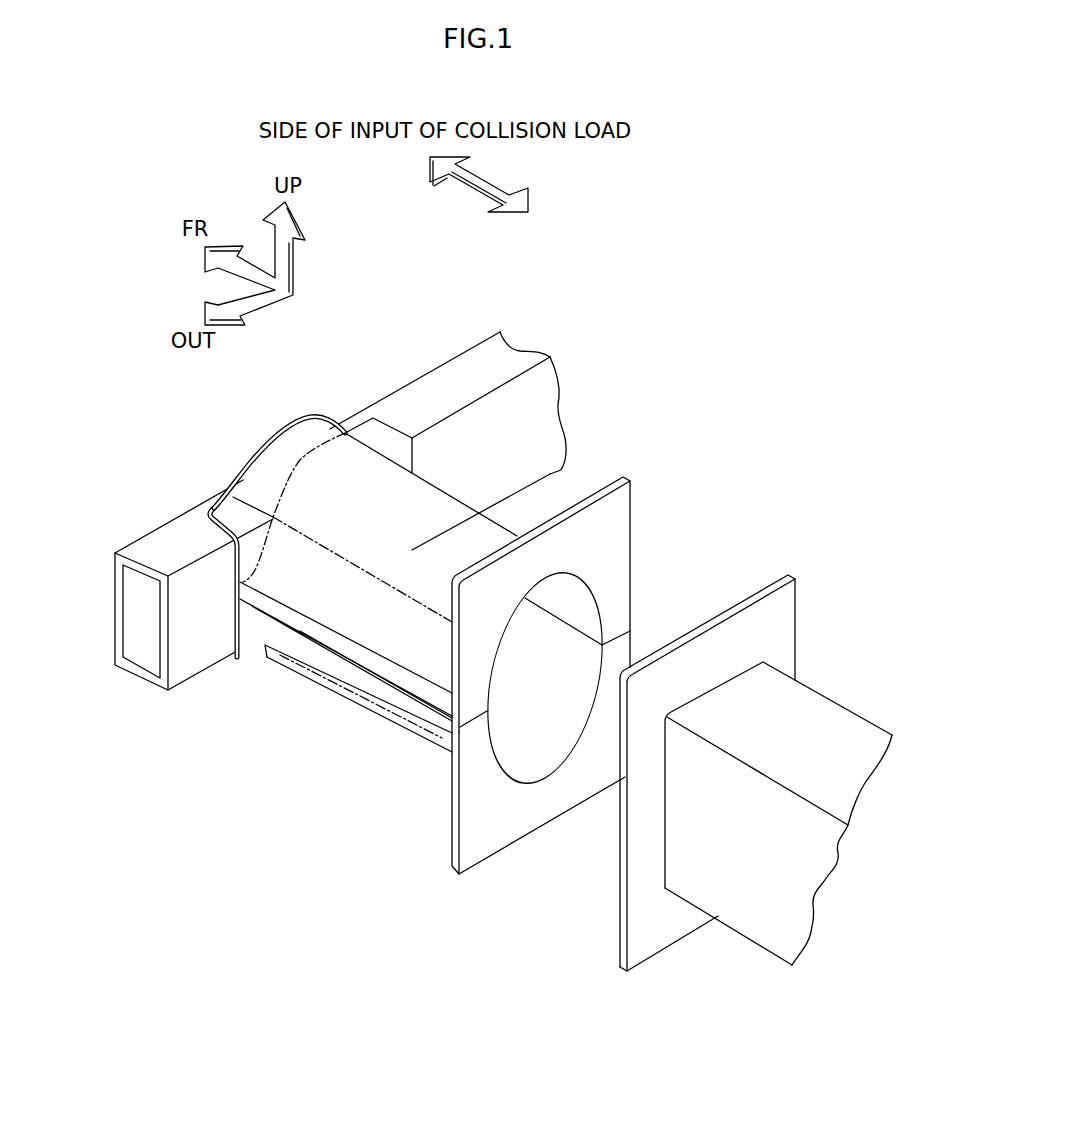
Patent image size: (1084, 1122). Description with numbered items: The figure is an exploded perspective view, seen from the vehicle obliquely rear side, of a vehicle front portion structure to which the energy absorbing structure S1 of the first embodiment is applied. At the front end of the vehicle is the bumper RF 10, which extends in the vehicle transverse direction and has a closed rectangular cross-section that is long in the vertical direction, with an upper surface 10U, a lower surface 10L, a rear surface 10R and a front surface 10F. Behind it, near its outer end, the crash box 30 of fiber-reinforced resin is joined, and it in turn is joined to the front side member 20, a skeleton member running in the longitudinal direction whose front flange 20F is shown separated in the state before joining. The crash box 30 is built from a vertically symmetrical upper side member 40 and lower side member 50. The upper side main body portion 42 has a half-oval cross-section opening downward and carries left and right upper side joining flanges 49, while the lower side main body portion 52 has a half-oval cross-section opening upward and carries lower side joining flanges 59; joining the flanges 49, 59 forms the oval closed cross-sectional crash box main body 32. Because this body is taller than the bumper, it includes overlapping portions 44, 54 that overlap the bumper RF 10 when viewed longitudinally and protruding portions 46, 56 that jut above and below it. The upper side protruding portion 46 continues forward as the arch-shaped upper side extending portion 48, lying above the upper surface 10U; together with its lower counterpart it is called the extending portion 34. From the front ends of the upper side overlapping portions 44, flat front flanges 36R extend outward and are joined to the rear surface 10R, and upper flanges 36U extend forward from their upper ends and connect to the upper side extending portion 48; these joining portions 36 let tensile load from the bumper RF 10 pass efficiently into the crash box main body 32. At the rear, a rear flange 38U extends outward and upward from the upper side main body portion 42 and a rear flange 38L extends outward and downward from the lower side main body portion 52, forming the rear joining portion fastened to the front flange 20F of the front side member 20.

The energy absorbing structure S1 is at (737, 233).
The bumper RF 10 is at (487, 339).
The front surface 10F is at (433, 356).
The upper surface 10U is at (510, 347).
The rear surface 10R is at (562, 405).
The lower surface 10L is at (556, 486).
The front side member 20 is at (826, 692).
The front flange 20F is at (792, 575).
The crash box 30 is at (655, 490).
The crash box main body 32 is at (351, 594).
The extending portion 34 is at (333, 519).
The joining portions 36 is at (190, 512).
The upper flange 36U is at (225, 513).
The front flange 36R is at (247, 633).
The rear flange 38U is at (633, 580).
The rear flange 38L is at (463, 873).
The upper side member 40 is at (633, 553).
The upper side main body portion 42 is at (351, 552).
The upper side overlapping portion 44 is at (270, 640).
The upper side protruding portion 46 is at (453, 513).
The upper side extending portion 48 is at (290, 433).
The upper side joining flange 49 is at (360, 653).
The lower side member 50 is at (450, 830).
The lower side main body portion 52 is at (341, 730).
The lower side overlapping portion 54 is at (337, 670).
The lower side protruding portion 56 is at (400, 723).
The lower side joining flange 59 is at (368, 683).